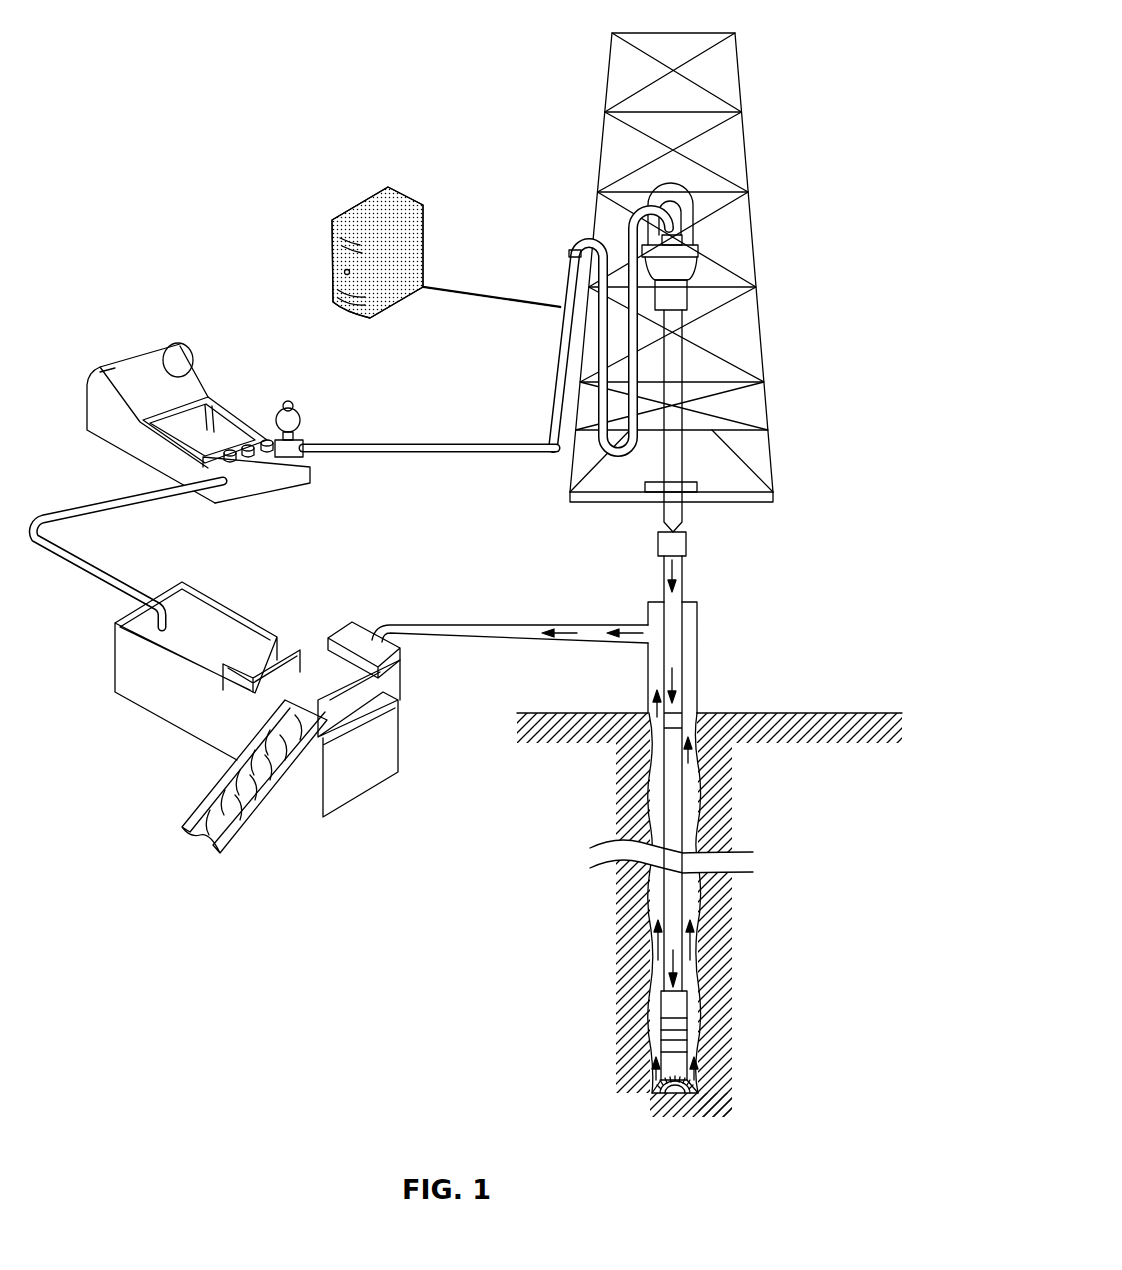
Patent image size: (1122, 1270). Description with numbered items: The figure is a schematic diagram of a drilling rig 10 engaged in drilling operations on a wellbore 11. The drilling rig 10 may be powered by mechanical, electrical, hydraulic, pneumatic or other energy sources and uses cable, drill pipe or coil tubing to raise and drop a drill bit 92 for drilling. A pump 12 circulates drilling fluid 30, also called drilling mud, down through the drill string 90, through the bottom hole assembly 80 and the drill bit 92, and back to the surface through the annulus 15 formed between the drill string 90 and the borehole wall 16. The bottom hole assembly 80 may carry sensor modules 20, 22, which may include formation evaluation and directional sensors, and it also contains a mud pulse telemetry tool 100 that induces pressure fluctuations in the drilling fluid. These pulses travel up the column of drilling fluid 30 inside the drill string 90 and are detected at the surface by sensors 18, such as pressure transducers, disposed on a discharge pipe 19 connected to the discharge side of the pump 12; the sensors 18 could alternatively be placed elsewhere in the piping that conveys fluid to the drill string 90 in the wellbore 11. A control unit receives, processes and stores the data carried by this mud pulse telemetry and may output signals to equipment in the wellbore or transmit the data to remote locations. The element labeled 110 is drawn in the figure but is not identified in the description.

The drilling rig 10 is at (600, 52).
The wellbore 11 is at (695, 713).
The pump 12 is at (185, 393).
The annulus 15 is at (689, 808).
The borehole wall 16 is at (700, 752).
The sensors 18 is at (562, 306).
The discharge pipe 19 is at (385, 445).
The sensor module 20 is at (688, 1048).
The sensor module 22 is at (700, 1074).
The drilling fluid 30 is at (652, 885).
The bottom hole assembly 80 is at (610, 991).
The drill string 90 is at (682, 618).
The drill bit 92 is at (657, 1088).
The mud pulse telemetry tool 100 is at (688, 1024).
The downhole tool 110 is at (687, 1000).